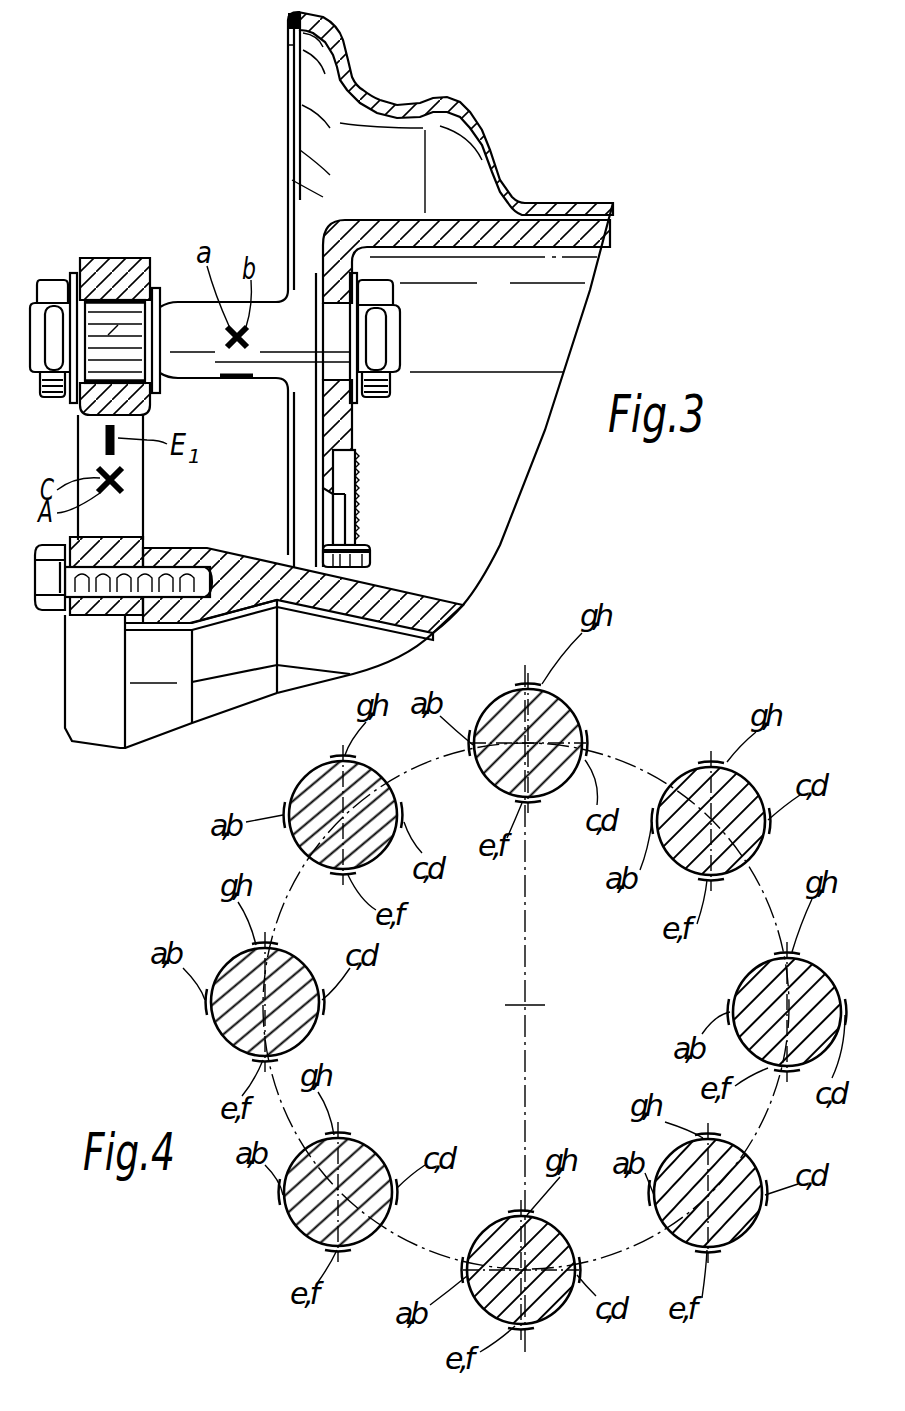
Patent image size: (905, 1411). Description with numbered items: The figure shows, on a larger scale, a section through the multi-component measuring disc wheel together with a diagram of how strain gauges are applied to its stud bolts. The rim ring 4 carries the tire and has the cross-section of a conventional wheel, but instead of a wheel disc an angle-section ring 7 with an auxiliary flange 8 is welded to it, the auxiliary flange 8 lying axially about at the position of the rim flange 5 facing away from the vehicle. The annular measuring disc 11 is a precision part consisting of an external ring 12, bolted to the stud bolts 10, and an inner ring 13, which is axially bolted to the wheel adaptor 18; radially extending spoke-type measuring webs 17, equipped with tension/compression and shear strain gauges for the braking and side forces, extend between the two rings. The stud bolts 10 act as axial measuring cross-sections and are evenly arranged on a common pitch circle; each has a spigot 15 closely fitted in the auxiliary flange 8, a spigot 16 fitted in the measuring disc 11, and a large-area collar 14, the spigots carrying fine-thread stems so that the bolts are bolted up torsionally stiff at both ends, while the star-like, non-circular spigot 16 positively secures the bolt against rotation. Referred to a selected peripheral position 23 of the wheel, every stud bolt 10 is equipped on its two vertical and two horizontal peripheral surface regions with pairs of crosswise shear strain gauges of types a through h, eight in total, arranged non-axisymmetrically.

In FIG. 3, the rim ring 4 is at (503, 131).
In FIG. 3, the rim flange 5 is at (330, 22).
In FIG. 3, the angle-section ring 7 is at (474, 247).
In FIG. 3, the auxiliary flange 8 is at (338, 440).
In FIG. 3, the stud bolt 10 is at (268, 290).
In FIG. 4, the stud bolt 10 is at (576, 714).
In FIG. 3, the measuring disc 11 is at (128, 248).
In FIG. 3, the external ring 12 is at (97, 268).
In FIG. 3, the inner ring 13 is at (100, 608).
In FIG. 3, the collar 14 is at (313, 395).
In FIG. 3, the spigot 15 is at (342, 343).
In FIG. 3, the spigot 16 is at (74, 403).
In FIG. 3, the measuring web 17 is at (133, 473).
In FIG. 3, the wheel adaptor 18 is at (413, 585).
In FIG. 4, the selected peripheral position 23 is at (525, 965).